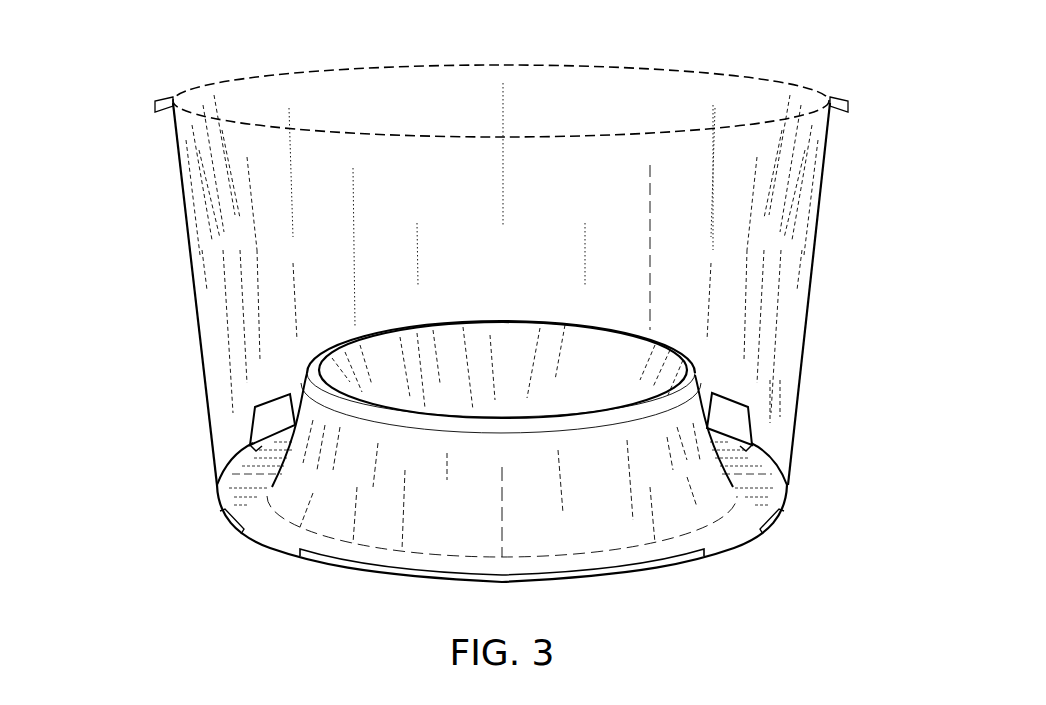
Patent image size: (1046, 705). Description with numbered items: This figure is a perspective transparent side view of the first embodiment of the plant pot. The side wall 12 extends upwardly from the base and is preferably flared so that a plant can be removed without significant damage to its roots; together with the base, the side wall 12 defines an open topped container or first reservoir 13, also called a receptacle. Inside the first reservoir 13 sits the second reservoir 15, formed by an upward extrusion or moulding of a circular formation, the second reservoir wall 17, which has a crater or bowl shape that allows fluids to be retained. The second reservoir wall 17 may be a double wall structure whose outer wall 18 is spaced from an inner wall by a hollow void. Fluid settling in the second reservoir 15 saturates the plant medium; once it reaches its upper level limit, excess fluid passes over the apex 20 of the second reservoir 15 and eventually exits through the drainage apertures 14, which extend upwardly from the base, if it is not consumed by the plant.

The side wall 12 is at (184, 242).
The first reservoir 13 is at (583, 82).
The drainage apertures 14 is at (266, 430).
The second reservoir 15 is at (489, 340).
The second reservoir wall 17 is at (640, 350).
The outer wall 18 is at (408, 505).
The apex 20 is at (592, 324).